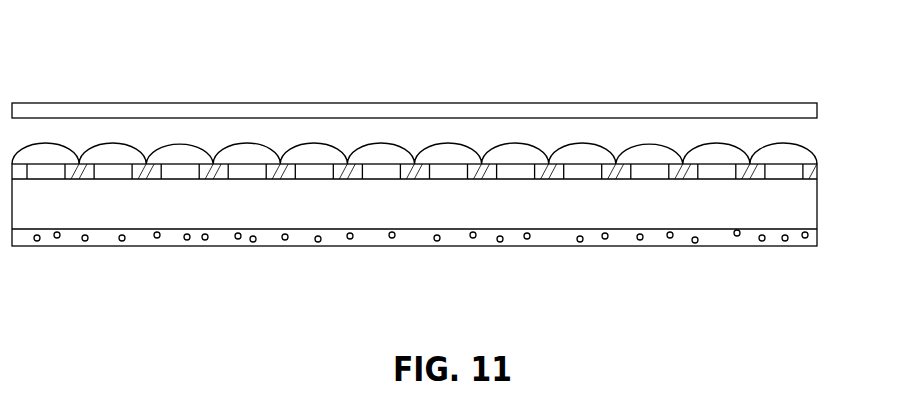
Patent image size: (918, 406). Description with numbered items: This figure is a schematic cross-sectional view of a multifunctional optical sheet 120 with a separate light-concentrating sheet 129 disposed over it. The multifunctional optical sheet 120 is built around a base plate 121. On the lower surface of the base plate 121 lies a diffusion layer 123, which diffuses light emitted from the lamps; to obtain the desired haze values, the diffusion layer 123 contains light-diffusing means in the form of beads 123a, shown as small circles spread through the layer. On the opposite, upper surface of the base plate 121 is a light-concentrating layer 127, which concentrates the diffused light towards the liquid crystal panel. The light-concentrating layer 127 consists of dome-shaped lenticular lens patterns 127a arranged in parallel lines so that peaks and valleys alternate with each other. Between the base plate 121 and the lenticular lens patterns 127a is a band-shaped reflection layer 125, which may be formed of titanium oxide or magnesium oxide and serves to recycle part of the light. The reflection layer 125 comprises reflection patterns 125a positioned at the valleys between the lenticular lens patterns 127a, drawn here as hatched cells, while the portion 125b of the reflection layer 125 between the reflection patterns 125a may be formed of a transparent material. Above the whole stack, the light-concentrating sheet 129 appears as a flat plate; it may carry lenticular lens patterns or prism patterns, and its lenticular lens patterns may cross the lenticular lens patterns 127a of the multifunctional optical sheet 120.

The multifunctional optical sheet 120 is at (461, 164).
The base plate 121 is at (461, 239).
The diffusion layer 123 is at (414, 272).
The beads 123a is at (694, 246).
The reflection layer 125 is at (461, 192).
The reflection patterns 125a is at (683, 180).
The portion of the reflection layer 125b is at (648, 180).
The light-concentrating layer 127 is at (461, 103).
The lenticular lens patterns 127a is at (447, 143).
The light-concentrating sheet 129 is at (598, 103).